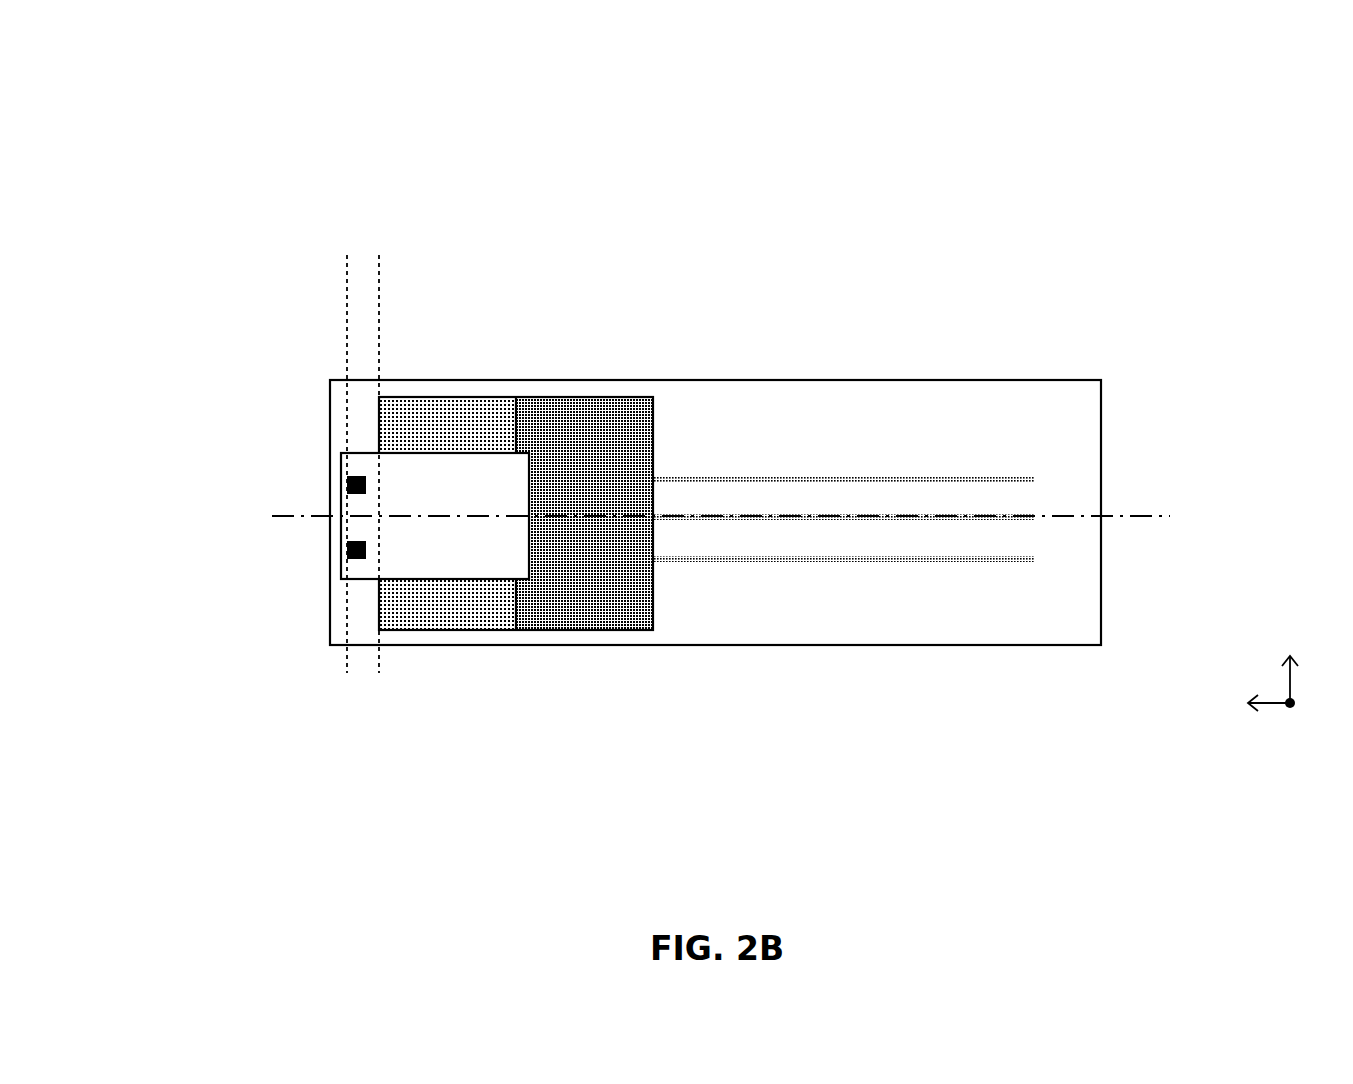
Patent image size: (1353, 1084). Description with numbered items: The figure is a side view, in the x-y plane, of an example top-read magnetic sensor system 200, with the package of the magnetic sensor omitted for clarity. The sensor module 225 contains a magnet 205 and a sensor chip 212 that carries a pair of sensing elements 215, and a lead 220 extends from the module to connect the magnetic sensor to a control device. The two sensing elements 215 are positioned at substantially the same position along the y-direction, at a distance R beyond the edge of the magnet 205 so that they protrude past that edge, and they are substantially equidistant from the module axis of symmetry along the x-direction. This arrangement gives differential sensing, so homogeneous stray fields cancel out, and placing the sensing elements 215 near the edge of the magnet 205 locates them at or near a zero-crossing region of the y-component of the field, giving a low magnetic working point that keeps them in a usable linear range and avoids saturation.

The top-read magnetic sensor system 200 is at (190, 62).
The magnet 205 is at (590, 397).
The sensor chip 212 is at (483, 579).
The sensing elements 215 is at (346, 488).
The lead 220 is at (742, 477).
The sensor module 225 is at (765, 380).